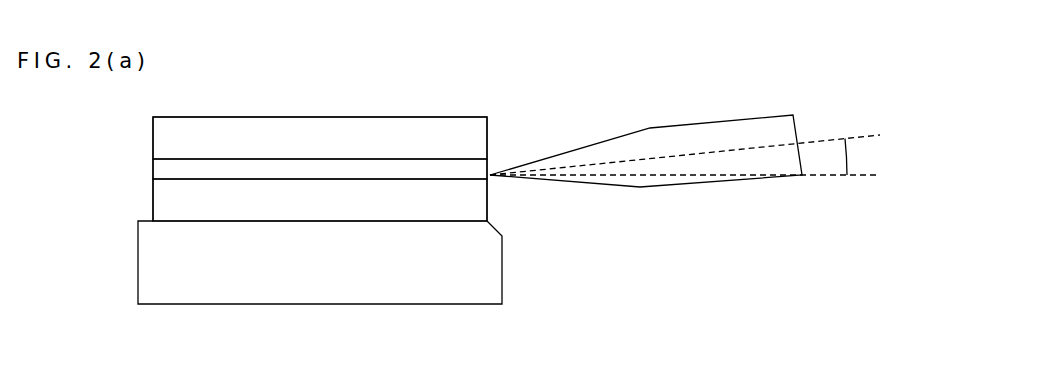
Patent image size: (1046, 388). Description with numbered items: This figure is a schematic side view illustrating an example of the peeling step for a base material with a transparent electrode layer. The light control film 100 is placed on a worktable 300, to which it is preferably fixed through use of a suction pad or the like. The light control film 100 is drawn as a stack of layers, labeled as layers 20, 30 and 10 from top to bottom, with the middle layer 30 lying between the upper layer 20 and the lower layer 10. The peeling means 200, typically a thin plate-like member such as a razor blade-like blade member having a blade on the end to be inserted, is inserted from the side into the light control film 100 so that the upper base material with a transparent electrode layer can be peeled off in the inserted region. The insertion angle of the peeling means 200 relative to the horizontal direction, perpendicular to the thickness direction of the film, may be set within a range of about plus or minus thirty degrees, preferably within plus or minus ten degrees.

The substrate layer 10 is at (153, 200).
The upper layer 20 is at (153, 133).
The intermediate layer 30 is at (153, 168).
The light control film 100 is at (290, 130).
The peeling means 200 is at (683, 124).
The worktable 300 is at (297, 304).